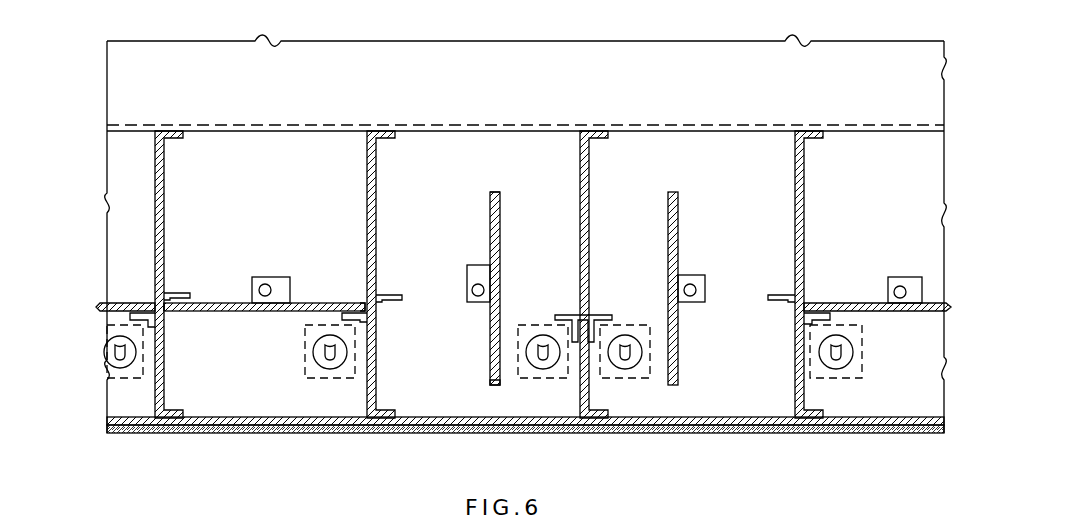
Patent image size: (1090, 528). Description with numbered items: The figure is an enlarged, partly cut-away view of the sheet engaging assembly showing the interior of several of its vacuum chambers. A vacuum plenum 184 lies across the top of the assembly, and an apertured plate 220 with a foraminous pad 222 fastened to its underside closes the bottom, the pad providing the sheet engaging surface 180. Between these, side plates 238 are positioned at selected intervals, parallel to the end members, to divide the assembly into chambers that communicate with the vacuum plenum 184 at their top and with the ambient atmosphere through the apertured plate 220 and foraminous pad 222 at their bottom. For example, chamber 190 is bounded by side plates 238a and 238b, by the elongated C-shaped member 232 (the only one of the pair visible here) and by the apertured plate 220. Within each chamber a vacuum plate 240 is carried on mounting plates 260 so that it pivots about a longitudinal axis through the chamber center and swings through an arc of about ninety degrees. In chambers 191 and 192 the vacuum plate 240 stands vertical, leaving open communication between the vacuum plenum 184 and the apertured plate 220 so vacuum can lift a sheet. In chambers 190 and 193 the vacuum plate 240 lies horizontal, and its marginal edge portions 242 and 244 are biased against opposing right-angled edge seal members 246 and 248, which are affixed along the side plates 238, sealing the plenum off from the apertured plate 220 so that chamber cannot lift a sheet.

The sheet engaging surface 180 is at (568, 445).
The vacuum plenum 184 is at (632, 87).
The chamber 190 is at (272, 385).
The chamber 191 is at (434, 390).
The chamber 192 is at (721, 398).
The chamber 193 is at (930, 375).
The apertured plate 220 is at (232, 428).
The foraminous pad 222 is at (252, 428).
The elongated C-shaped member 232 is at (935, 150).
The side plate 238 is at (590, 172).
The side plate 238a is at (165, 176).
The side plate 238b is at (377, 173).
The vacuum plate 240 is at (318, 303).
The marginal edge portion 242 is at (175, 311).
The marginal edge portion 244 is at (362, 300).
The right-angled edge seal member 246 is at (175, 295).
The right-angled edge seal member 248 is at (357, 318).
The mounting plate 260 is at (270, 277).